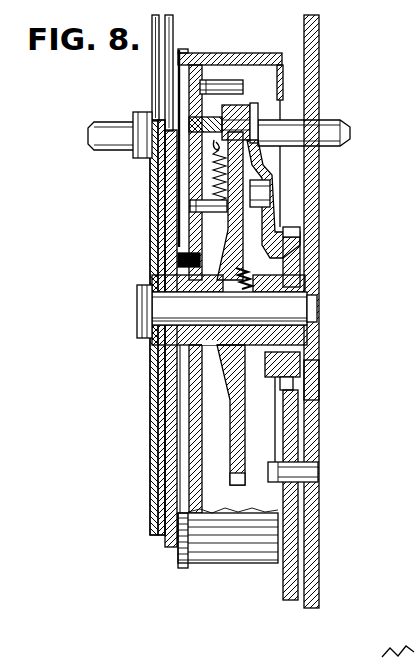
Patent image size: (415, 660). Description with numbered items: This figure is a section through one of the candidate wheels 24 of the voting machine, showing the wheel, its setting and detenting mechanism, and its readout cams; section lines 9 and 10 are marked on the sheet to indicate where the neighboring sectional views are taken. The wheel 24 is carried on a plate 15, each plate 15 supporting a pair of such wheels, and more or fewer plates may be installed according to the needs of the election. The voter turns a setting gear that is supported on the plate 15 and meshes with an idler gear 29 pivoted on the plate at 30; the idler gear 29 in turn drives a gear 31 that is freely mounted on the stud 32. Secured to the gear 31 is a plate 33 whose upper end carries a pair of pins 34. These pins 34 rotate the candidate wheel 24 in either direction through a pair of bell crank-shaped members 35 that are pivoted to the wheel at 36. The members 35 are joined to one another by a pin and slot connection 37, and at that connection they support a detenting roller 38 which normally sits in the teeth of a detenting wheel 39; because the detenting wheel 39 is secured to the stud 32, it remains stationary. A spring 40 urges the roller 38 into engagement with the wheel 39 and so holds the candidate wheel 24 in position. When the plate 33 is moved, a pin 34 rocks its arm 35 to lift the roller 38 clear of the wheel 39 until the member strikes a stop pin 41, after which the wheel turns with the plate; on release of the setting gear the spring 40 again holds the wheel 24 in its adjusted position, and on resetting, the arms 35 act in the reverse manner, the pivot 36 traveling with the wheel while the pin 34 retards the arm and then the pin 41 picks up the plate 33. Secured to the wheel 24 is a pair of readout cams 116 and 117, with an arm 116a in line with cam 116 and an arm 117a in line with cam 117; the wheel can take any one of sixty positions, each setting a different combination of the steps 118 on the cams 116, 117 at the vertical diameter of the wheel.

The section line 9- 9 is at (180, 22).
The section line 10- 10 is at (282, 33).
The plate 15 is at (309, 381).
The candidate wheel 24 is at (235, 55).
The idler gear 29 is at (290, 523).
The pivot 30 is at (305, 463).
The gear 31 is at (292, 248).
The stud 32 is at (300, 298).
The plate 33 is at (270, 212).
The pin 34 is at (268, 192).
The bell crank-shaped member 35 is at (246, 108).
The pivot 36 is at (208, 110).
The pin and slot connection 37 is at (210, 135).
The detenting roller 38 is at (262, 108).
The detenting wheel 39 is at (237, 225).
The spring 40 is at (220, 181).
The pin 41 is at (213, 82).
The readout cam 116 is at (172, 228).
The readout cam 117 is at (152, 222).
The arm 116a is at (168, 82).
The arm 117a is at (153, 62).
The steps 118 is at (402, 650).